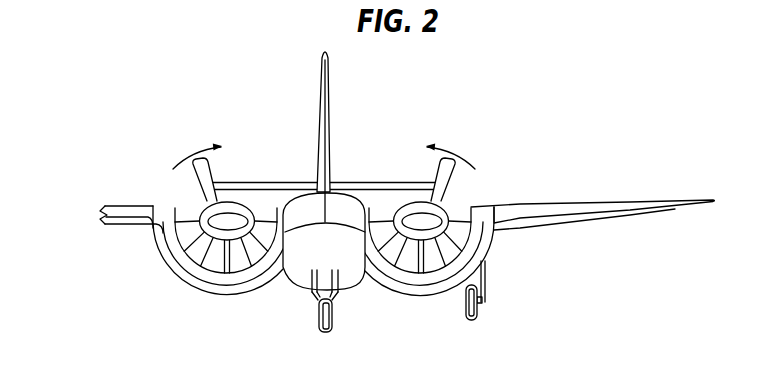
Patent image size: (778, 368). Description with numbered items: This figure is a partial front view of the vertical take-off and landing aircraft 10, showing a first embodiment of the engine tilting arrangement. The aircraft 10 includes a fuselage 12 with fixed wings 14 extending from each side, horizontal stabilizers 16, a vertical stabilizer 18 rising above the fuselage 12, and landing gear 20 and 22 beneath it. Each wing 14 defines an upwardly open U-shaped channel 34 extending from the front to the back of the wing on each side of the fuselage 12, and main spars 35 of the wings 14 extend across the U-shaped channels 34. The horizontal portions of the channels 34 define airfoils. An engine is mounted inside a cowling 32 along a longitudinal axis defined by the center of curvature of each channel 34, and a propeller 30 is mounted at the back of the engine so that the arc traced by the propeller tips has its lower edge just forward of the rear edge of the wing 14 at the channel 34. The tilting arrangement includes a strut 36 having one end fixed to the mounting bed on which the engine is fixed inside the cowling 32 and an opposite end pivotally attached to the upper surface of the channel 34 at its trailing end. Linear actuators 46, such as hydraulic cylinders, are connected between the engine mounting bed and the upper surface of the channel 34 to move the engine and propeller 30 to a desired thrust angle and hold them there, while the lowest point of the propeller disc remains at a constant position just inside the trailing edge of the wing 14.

The vertical take-off and landing aircraft 10 is at (181, 112).
The fuselage 12 is at (350, 278).
The fixed wings 14 is at (123, 206).
The horizontal stabilizers 16 is at (264, 183).
The vertical stabilizer 18 is at (331, 97).
The landing gear 20 is at (316, 322).
The landing gear 22 is at (467, 316).
The propeller 30 is at (206, 170).
The cowling 32 is at (199, 220).
The U-shaped channel 34 is at (188, 233).
The main spar 35 is at (466, 207).
The strut 36 is at (222, 260).
The linear actuator 46 is at (193, 243).